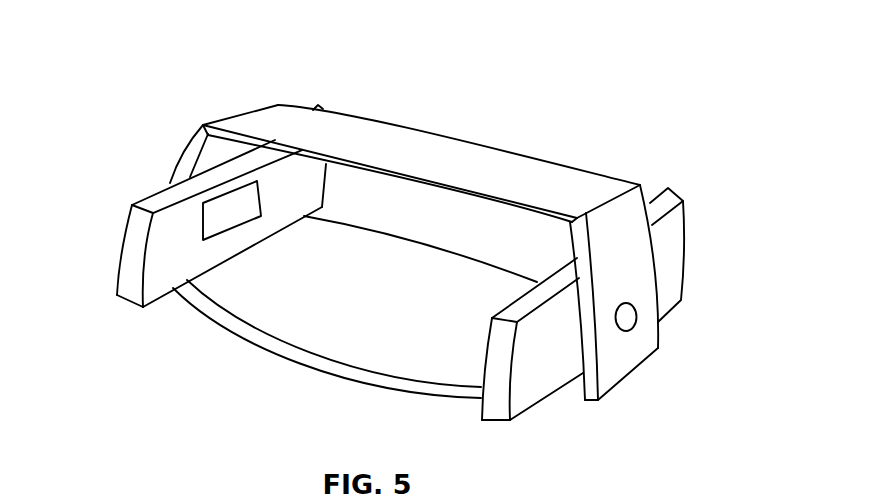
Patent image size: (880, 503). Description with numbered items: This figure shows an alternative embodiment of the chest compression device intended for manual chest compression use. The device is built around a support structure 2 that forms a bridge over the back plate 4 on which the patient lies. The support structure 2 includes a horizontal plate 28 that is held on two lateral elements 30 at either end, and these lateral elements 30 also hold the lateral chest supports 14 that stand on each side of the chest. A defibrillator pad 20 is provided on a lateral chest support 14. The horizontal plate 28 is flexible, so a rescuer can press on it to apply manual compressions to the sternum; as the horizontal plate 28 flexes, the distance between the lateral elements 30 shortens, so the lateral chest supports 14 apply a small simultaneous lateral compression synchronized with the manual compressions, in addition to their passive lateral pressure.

The support structure 2 is at (390, 237).
The back plate 4 is at (245, 302).
The lateral chest supports 14 is at (334, 297).
The defibrillator pads 20 is at (225, 208).
The horizontal plate 28 is at (497, 180).
The lateral elements 30 is at (205, 140).